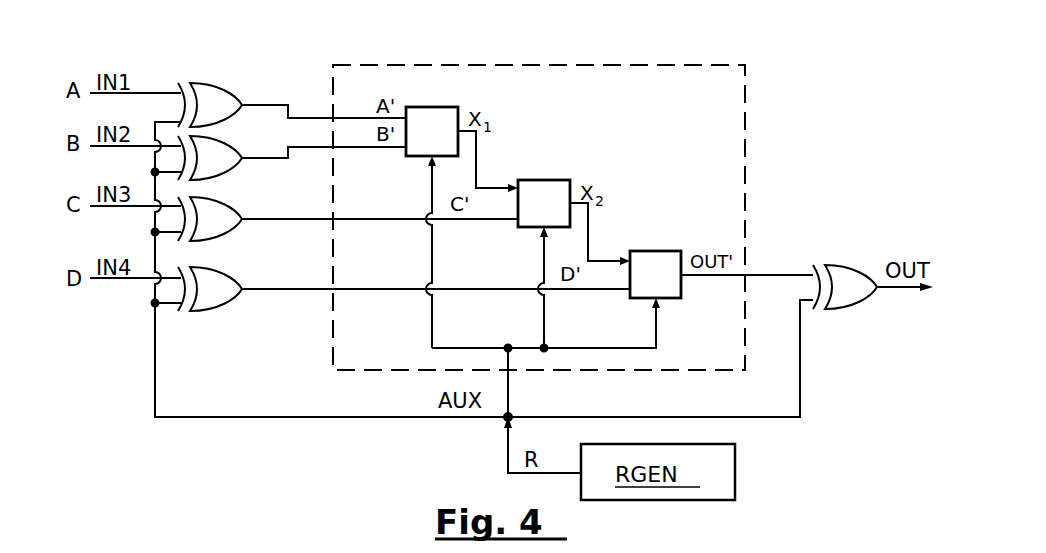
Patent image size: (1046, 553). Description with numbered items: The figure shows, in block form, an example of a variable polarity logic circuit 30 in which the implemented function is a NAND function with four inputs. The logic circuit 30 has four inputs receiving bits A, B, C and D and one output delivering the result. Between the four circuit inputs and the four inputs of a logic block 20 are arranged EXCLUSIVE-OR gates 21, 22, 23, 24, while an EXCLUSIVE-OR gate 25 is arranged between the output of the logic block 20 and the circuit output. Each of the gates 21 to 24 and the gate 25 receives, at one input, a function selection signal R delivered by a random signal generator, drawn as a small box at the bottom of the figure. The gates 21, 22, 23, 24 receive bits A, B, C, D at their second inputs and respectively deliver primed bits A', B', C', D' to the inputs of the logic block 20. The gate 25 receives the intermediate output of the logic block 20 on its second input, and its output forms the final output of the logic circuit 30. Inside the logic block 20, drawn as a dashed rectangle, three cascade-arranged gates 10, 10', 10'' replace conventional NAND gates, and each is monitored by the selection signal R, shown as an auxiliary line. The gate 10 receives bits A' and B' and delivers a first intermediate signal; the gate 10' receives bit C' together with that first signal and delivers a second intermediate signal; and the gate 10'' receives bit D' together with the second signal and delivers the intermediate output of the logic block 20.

The gate 10 is at (447, 88).
The gate 10' is at (551, 171).
The gate 10'' is at (658, 246).
The logic block 20 is at (667, 65).
The EXCLUSIVE-OR gate 21 is at (212, 83).
The EXCLUSIVE-OR gate 22 is at (230, 136).
The EXCLUSIVE-OR gate 23 is at (228, 198).
The EXCLUSIVE-OR gate 24 is at (228, 268).
The EXCLUSIVE-OR gate 25 is at (843, 265).
The logic circuit 30 is at (814, 98).